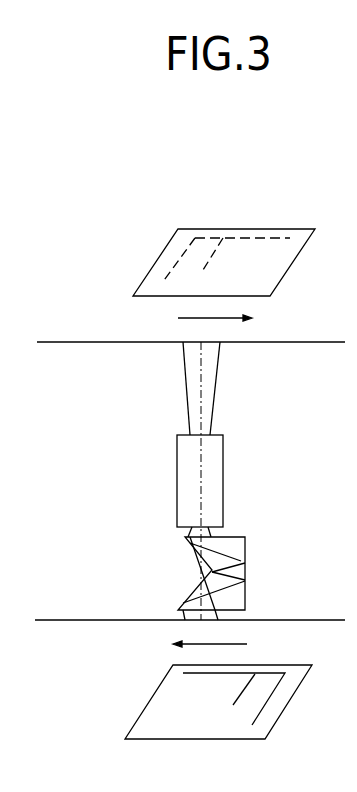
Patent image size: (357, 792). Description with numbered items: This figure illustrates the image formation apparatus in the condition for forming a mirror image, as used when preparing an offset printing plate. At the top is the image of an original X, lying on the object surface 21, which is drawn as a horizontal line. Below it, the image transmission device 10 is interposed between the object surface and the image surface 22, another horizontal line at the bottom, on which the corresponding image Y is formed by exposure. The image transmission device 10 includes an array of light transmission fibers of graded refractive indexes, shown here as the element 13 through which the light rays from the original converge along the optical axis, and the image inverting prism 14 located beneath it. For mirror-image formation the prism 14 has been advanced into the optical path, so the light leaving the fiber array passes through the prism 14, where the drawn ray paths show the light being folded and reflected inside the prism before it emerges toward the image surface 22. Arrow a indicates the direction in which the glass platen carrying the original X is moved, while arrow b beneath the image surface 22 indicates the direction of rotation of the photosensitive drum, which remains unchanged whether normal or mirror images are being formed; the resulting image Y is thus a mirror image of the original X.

The image transmission device 10 is at (255, 403).
The lens block 13 is at (218, 462).
The image inverting prism 14 is at (245, 537).
The object surface 21 is at (104, 342).
The image surface 22 is at (113, 620).
The image of an original X is at (277, 274).
The image formed by exposure Y is at (165, 727).
The direction of movement of the glass platen a is at (225, 319).
The direction of rotation of the drum b is at (219, 642).